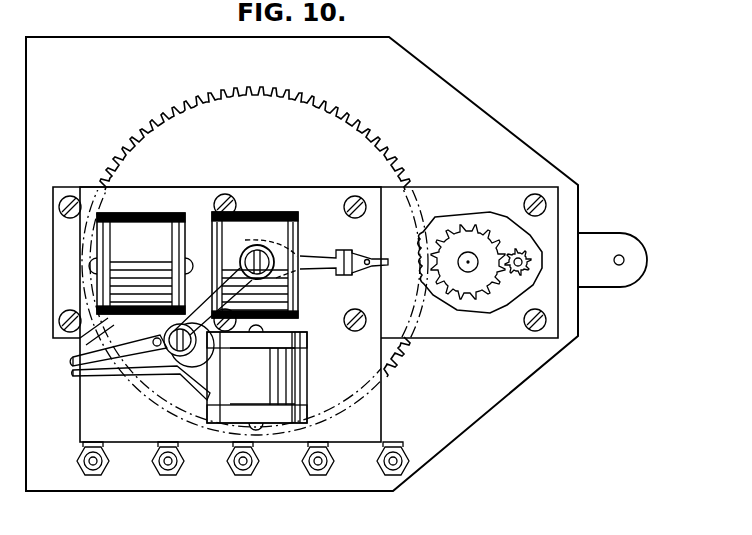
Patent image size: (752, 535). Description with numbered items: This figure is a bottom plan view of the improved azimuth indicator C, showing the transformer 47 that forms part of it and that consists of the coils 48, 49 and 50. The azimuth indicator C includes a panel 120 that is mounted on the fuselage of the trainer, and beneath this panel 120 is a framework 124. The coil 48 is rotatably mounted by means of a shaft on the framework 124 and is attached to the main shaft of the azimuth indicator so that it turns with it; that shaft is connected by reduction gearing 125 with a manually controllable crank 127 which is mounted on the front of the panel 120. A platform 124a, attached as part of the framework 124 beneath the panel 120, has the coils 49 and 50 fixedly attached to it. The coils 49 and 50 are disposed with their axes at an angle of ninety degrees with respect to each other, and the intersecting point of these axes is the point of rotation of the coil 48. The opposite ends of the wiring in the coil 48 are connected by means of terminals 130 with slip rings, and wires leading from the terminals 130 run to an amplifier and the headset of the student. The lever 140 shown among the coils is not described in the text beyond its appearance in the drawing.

The panel 120 is at (383, 54).
The reduction gearing 125 is at (313, 125).
The framework 124 is at (484, 332).
The platform 124a is at (372, 416).
The crank 127 is at (598, 243).
The terminals 130 is at (316, 270).
The lever 140 is at (197, 322).
The transformer 47 is at (257, 212).
The coil 48 is at (278, 230).
The coil 49 is at (290, 377).
The coil 50 is at (148, 232).
The azimuth indicator C is at (513, 134).